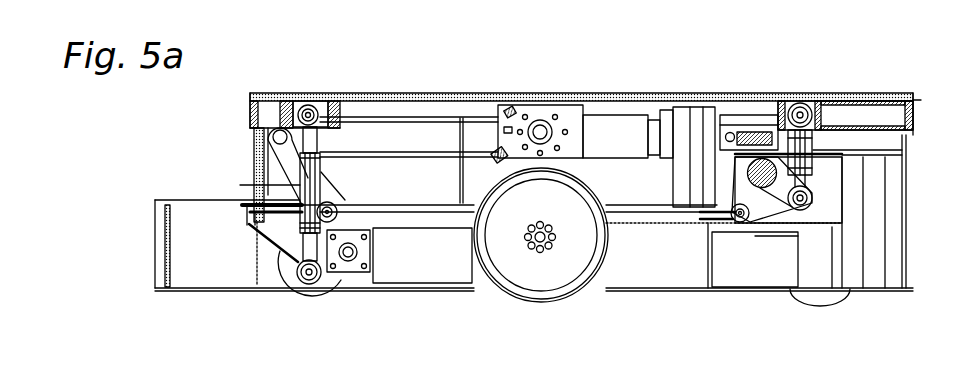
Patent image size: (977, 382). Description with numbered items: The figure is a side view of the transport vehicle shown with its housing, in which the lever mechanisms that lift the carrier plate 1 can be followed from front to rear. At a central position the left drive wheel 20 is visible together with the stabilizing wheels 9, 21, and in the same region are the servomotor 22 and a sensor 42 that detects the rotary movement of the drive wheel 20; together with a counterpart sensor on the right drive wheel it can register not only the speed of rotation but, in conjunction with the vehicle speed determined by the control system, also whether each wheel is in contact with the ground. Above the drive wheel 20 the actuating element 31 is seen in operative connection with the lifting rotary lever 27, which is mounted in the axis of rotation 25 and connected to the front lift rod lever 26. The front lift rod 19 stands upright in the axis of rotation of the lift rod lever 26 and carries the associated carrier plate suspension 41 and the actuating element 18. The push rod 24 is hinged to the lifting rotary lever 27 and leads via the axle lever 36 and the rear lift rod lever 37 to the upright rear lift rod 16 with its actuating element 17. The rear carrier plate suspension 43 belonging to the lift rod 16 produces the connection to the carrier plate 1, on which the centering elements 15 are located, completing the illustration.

The carrier plate 1 is at (800, 103).
The stabilizing wheel 9 is at (292, 285).
The centering elements 15 is at (775, 92).
The rear lift rod 16 is at (812, 186).
The actuating element 17 is at (812, 150).
The actuating element 18 is at (300, 203).
The front lift rod 19 is at (268, 126).
The left drive wheel 20 is at (553, 275).
The stabilizing wheel 21 is at (797, 288).
The servomotor 22 is at (540, 108).
The push rod 24 is at (672, 212).
The axis of rotation 25 is at (357, 257).
The front lift rod lever 26 is at (330, 270).
The lifting rotary lever 27 is at (287, 158).
The actuating element 31 is at (440, 135).
The axle lever 36 is at (757, 198).
The rear lift rod lever 37 is at (788, 177).
The carrier plate suspension 41 is at (371, 95).
The sensor 42 is at (558, 165).
The rear carrier plate suspension 43 is at (812, 97).